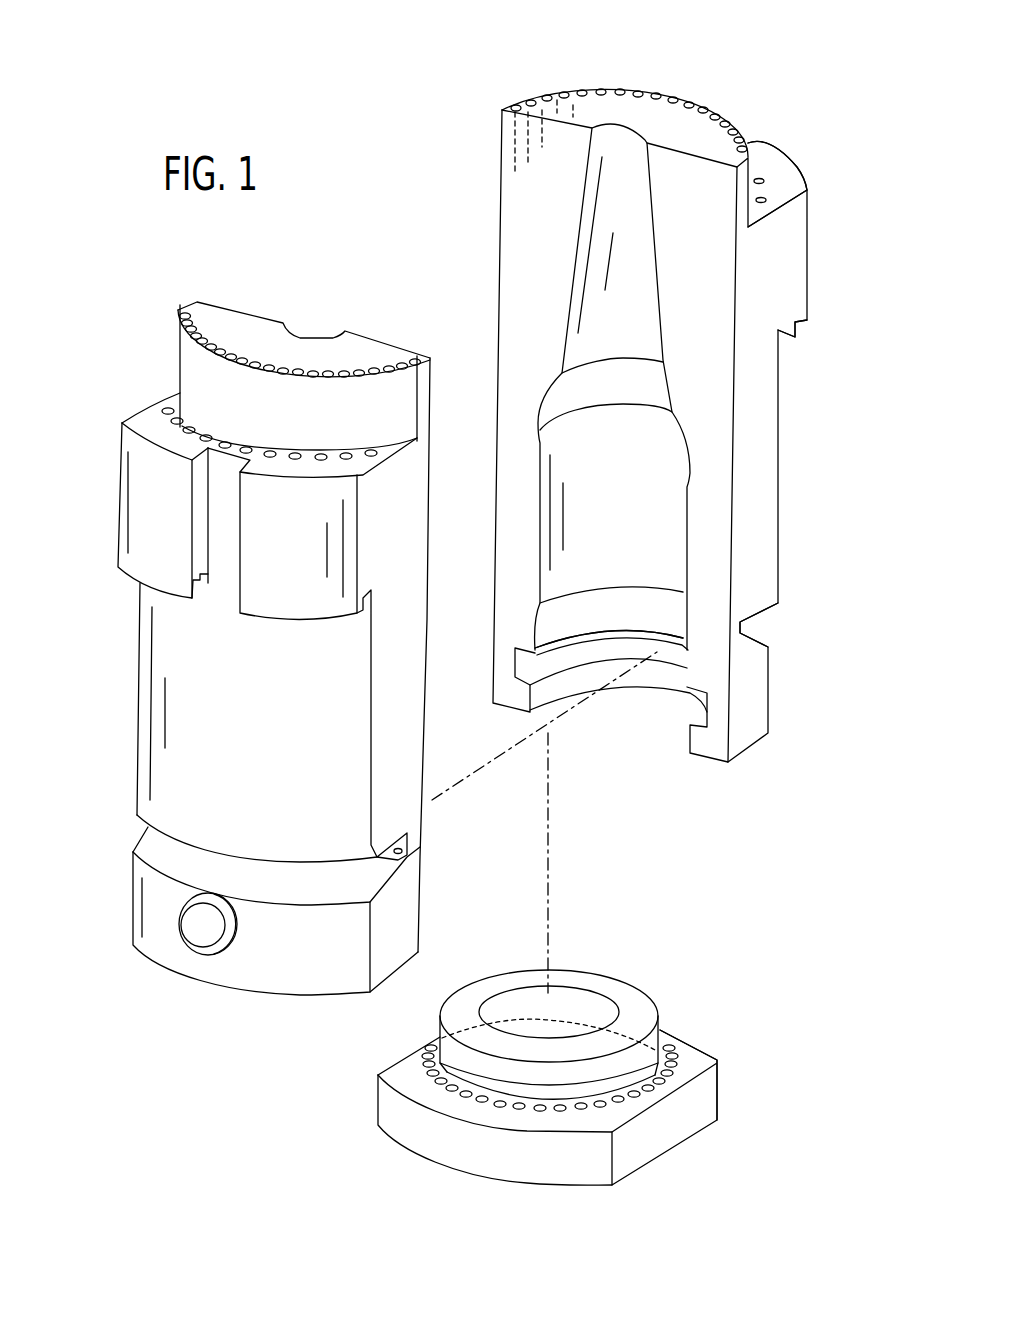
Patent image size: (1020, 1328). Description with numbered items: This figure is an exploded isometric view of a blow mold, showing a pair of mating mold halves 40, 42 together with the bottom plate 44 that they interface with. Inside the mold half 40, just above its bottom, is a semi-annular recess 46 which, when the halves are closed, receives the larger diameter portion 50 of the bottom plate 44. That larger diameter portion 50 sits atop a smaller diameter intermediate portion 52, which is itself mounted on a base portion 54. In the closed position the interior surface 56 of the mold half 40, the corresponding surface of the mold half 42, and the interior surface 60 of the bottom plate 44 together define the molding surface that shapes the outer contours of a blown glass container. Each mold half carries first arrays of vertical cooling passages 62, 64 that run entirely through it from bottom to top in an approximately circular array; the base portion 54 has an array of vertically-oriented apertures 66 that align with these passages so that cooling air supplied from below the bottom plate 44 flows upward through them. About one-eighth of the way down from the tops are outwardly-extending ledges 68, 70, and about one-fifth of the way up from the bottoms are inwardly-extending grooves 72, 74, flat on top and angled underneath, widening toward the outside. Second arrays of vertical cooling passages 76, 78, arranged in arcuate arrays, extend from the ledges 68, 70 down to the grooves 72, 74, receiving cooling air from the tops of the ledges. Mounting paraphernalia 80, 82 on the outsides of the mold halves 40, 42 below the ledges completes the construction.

The mold half 40 is at (735, 775).
The mold half 42 is at (202, 1004).
The bottom plate 44 is at (476, 1188).
The semi-annular recess 46 is at (667, 657).
The larger diameter portion 50 is at (647, 993).
The smaller diameter intermediate portion 52 is at (543, 1102).
The base portion 54 is at (718, 1089).
The interior surface 56 is at (653, 485).
The interior surface 60 is at (580, 998).
The first array of vertical cooling passages 62 is at (612, 88).
The first array of vertical cooling passages 64 is at (358, 370).
The vertically-oriented apertures 66 is at (581, 1108).
The outwardly-extending ledge 68 is at (775, 168).
The outwardly-extending ledge 70 is at (155, 432).
The inwardly-extending groove 72 is at (743, 628).
The inwardly-extending groove 74 is at (378, 858).
The second array of vertical cooling passages 76 is at (762, 200).
The second array of vertical cooling passages 78 is at (205, 432).
The mounting paraphernalia 80 is at (807, 319).
The mounting paraphernalia 82 is at (260, 602).